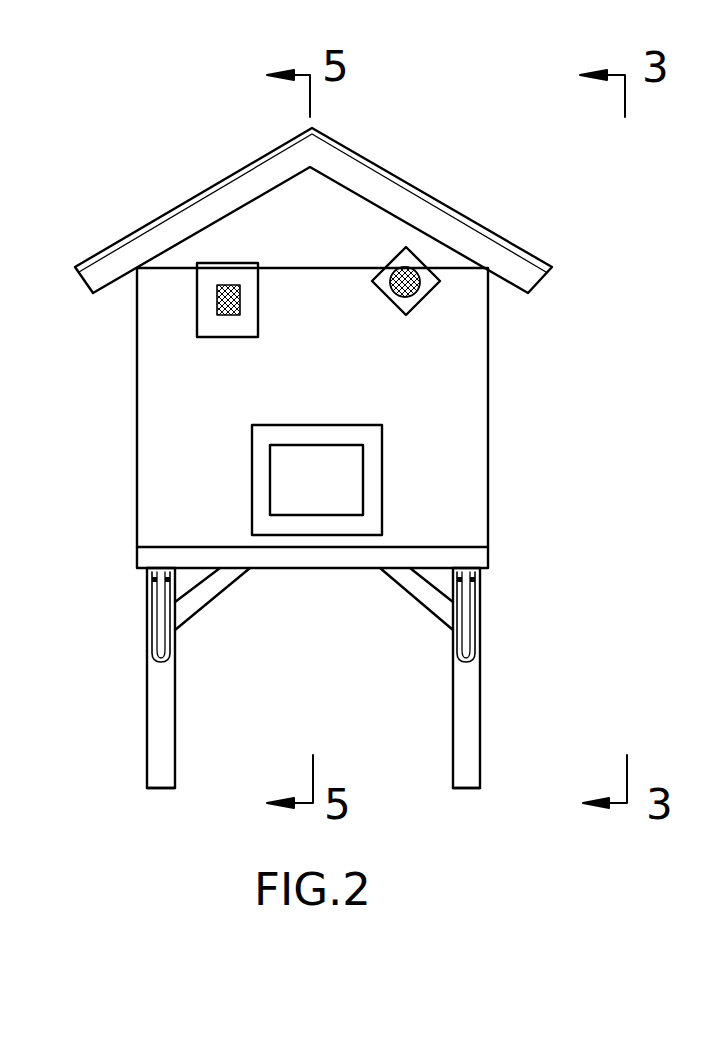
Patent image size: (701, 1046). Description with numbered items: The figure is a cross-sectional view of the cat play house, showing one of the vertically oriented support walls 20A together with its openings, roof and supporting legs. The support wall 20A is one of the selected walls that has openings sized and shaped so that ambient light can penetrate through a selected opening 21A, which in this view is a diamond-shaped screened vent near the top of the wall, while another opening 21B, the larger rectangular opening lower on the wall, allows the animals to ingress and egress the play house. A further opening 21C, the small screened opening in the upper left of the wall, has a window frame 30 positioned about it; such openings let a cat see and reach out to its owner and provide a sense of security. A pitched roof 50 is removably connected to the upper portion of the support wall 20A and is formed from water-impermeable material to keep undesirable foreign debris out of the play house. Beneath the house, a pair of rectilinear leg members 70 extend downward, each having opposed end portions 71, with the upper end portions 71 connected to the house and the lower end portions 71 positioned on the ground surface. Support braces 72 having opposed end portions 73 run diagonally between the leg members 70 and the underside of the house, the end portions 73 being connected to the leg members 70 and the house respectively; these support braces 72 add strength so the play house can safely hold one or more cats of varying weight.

The selected support wall 20A is at (450, 408).
The light-admitting opening 21A is at (417, 282).
The ingress and egress opening 21B is at (307, 480).
The framed opening 21C is at (232, 284).
The window frame 30 is at (197, 322).
The pitched roof 50 is at (418, 192).
The rectilinear leg member 70 is at (147, 658).
The leg member end portion 71 is at (147, 570).
The support brace 72 is at (412, 602).
The support brace end portion 73 is at (176, 633).